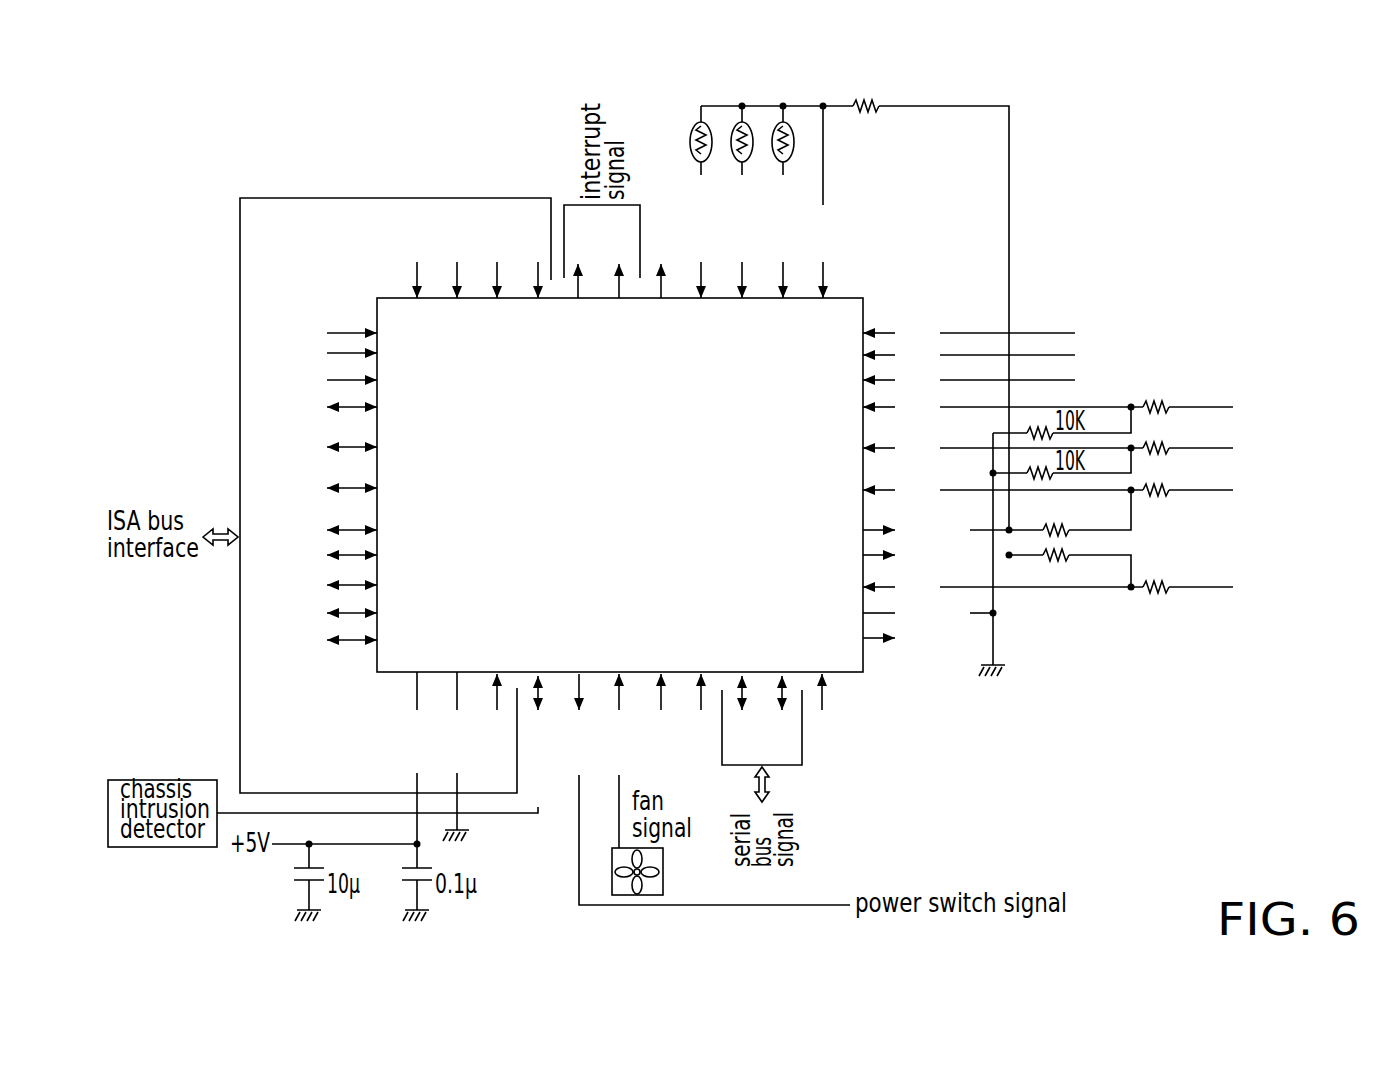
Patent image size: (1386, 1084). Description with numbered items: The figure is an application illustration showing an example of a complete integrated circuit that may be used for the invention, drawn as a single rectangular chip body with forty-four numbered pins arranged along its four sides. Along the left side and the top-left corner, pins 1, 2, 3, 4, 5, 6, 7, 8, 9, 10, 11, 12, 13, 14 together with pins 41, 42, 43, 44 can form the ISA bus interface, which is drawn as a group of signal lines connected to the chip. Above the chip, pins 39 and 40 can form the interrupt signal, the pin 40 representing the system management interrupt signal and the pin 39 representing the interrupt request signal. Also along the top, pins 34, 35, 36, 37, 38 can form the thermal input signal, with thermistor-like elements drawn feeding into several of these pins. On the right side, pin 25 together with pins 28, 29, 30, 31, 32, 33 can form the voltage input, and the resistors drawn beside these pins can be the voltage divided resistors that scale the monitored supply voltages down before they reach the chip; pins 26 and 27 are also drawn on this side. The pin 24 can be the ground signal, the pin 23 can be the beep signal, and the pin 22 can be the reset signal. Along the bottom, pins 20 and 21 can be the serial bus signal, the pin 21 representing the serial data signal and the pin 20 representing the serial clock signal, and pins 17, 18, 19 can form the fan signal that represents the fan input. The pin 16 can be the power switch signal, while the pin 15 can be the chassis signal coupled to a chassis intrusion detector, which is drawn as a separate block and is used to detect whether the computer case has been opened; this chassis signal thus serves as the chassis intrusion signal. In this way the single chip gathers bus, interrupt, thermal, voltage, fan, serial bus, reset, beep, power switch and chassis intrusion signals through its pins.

The pin 1 is at (342, 332).
The pin 2 is at (342, 352).
The pin 3 is at (327, 379).
The pin 4 is at (352, 406).
The pin 5 is at (352, 446).
The pin 6 is at (352, 487).
The pin 7 is at (352, 529).
The pin 8 is at (352, 554).
The pin 9 is at (352, 584).
The pin 10 is at (361, 612).
The pin 11 is at (361, 639).
The pin 12 is at (417, 740).
The pin 13 is at (457, 739).
The pin 14 is at (497, 705).
The pin 15 is at (538, 720).
The pin 16 is at (705, 771).
The pin 17 is at (619, 742).
The pin 18 is at (661, 703).
The pin 19 is at (701, 703).
The pin 20 is at (742, 698).
The pin 21 is at (782, 698).
The pin 22 is at (822, 703).
The pin 23 is at (892, 637).
The pin 24 is at (906, 612).
The pin 25 is at (1046, 579).
The pin 26 is at (974, 562).
The pin 27 is at (974, 518).
The pin 28 is at (1050, 482).
The pin 29 is at (1050, 441).
The pin 30 is at (1046, 401).
The pin 31 is at (975, 379).
The pin 32 is at (981, 354).
The pin 33 is at (981, 332).
The pin 34 is at (823, 268).
The pin 35 is at (783, 253).
The pin 36 is at (742, 253).
The pin 37 is at (701, 253).
The pin 38 is at (661, 252).
The pin 39 is at (619, 268).
The pin 40 is at (578, 268).
The pin 41 is at (538, 277).
The pin 42 is at (497, 277).
The pin 43 is at (457, 277).
The pin 44 is at (417, 275).